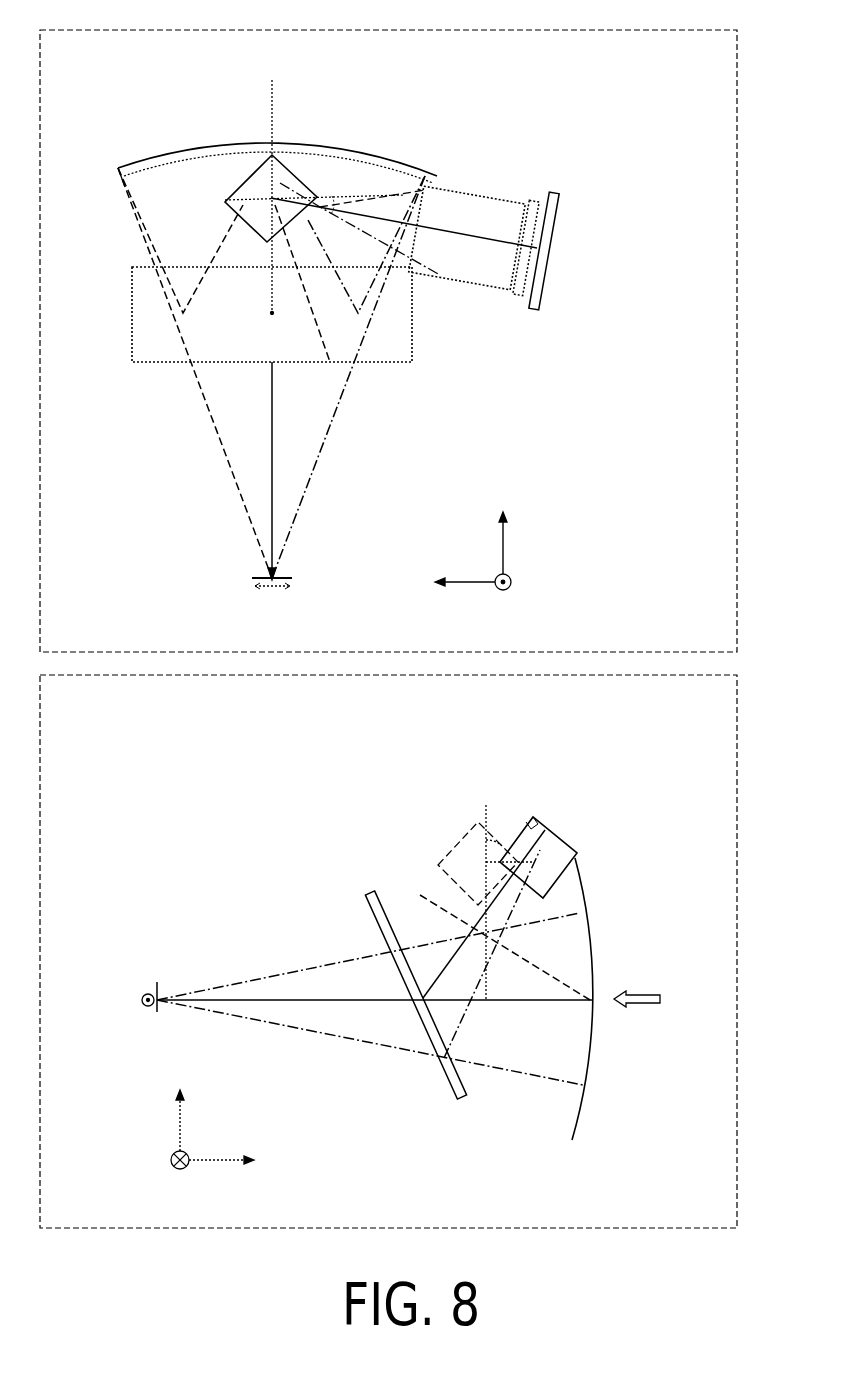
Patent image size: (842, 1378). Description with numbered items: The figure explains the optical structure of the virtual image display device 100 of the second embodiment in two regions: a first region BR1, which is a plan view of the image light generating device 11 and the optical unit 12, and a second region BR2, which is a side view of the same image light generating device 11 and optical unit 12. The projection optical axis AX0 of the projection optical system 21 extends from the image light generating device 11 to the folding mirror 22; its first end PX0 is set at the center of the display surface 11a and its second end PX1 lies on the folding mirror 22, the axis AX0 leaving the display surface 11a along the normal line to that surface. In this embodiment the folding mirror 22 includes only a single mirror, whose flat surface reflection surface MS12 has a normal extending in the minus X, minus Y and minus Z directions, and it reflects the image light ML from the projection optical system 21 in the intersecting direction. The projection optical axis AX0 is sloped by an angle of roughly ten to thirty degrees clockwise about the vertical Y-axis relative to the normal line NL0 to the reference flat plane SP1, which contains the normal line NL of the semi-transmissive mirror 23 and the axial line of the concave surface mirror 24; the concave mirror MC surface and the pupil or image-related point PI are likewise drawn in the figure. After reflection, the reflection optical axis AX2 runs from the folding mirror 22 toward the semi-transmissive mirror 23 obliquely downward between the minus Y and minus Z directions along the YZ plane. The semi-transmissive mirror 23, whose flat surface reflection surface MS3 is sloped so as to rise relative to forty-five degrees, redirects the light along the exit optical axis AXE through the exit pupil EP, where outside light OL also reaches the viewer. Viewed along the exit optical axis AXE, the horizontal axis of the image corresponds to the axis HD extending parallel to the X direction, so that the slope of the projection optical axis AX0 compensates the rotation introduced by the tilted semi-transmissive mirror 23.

The optical unit 12 is at (380, 137).
The folding mirror 22 is at (245, 180).
The concave surface mirror 24 is at (305, 150).
The projection optical system 21 is at (483, 205).
The image light generating device 11 is at (549, 194).
The display surface 11a is at (535, 228).
The semi-transmissive mirror 23 is at (415, 320).
The virtual image display device 100 is at (560, 789).
The flat surface reflection surface MS12 is at (233, 190).
The flat surface reflection surface MS3 is at (414, 356).
The combiner reflection surface MC is at (356, 157).
The image light ML is at (425, 193).
The projection optical axis AX0 is at (483, 243).
The exit optical axis AXE is at (343, 380).
The reflection optical axis AX2 is at (483, 960).
The reference flat plane SP1 is at (278, 93).
The exit pupil EP is at (252, 579).
The axis HD is at (268, 590).
The first end PX0 is at (545, 253).
The second end PX1 is at (274, 195).
The normal line NL0 is at (317, 190).
The normal line NL is at (484, 930).
The intermediate image position PI is at (318, 203).
The outside light OL is at (632, 1008).
The first region BR1 is at (738, 92).
The second region BR2 is at (738, 740).